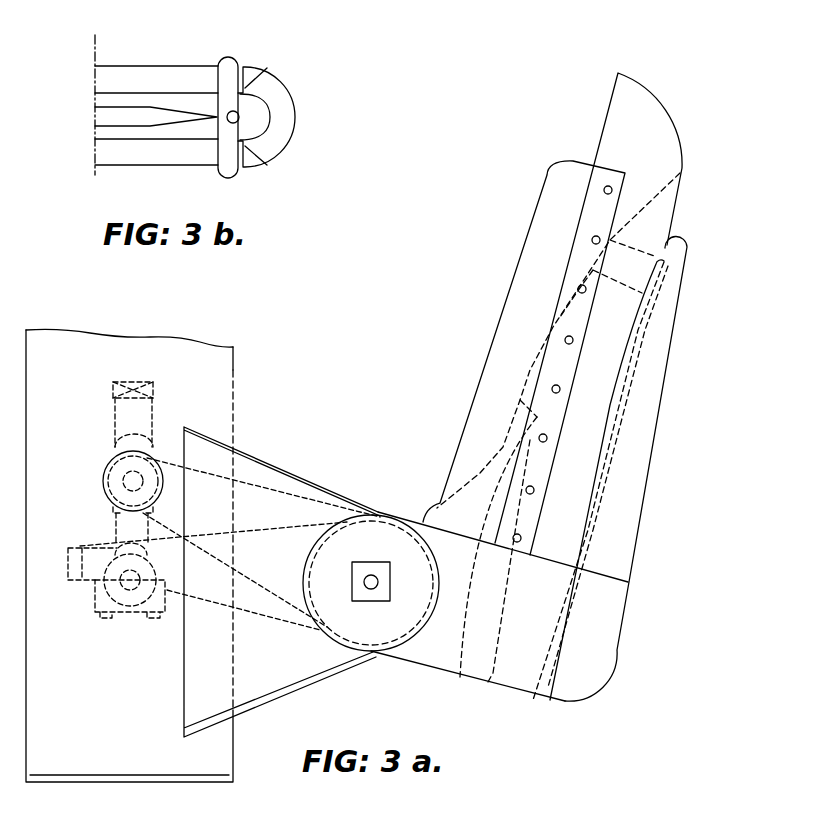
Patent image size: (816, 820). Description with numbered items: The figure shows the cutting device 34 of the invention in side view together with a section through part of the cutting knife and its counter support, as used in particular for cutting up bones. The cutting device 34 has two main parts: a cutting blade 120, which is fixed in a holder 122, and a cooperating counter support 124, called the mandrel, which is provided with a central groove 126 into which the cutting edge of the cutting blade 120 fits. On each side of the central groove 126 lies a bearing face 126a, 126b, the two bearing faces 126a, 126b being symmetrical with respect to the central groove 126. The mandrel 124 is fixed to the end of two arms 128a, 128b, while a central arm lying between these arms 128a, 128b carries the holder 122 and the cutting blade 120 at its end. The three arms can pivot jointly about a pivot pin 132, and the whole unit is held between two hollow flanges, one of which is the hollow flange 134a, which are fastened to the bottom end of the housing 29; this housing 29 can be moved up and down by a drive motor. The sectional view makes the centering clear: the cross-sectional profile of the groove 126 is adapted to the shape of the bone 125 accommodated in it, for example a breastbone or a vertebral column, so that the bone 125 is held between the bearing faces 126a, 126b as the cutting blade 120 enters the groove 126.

In FIG. 3a, the housing 29 is at (235, 370).
In FIG. 3a, the cutting device 34 is at (634, 632).
In FIG. 3b, the cutting blade 120 is at (150, 117).
In FIG. 3a, the cutting blade 120 is at (648, 113).
In FIG. 3a, the holder 122 is at (542, 238).
In FIG. 3b, the counter support 124 is at (292, 119).
In FIG. 3a, the counter support 124 is at (647, 393).
In FIG. 3b, the bone 125 is at (228, 77).
In FIG. 3b, the central groove 126 is at (260, 98).
In FIG. 3a, the central groove 126 is at (647, 293).
In FIG. 3b, the bearing face 126a is at (255, 92).
In FIG. 3b, the bearing face 126b is at (260, 140).
In FIG. 3b, the arm 128a is at (143, 150).
In FIG. 3b, the arm 128b is at (138, 72).
In FIG. 3a, the pivot pin 132 is at (368, 576).
In FIG. 3a, the hollow flange 134a is at (283, 465).